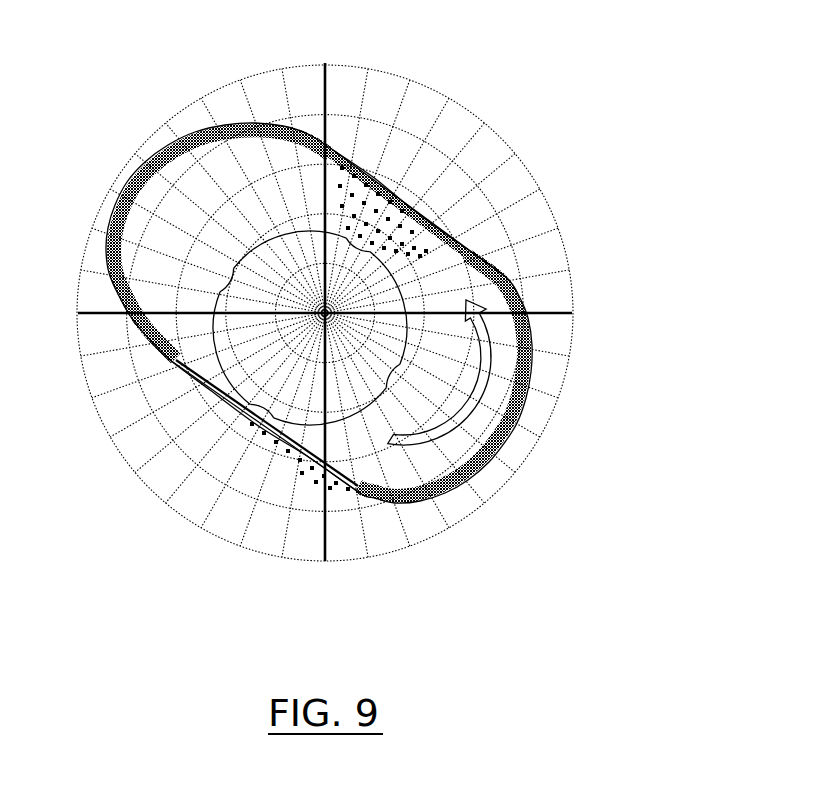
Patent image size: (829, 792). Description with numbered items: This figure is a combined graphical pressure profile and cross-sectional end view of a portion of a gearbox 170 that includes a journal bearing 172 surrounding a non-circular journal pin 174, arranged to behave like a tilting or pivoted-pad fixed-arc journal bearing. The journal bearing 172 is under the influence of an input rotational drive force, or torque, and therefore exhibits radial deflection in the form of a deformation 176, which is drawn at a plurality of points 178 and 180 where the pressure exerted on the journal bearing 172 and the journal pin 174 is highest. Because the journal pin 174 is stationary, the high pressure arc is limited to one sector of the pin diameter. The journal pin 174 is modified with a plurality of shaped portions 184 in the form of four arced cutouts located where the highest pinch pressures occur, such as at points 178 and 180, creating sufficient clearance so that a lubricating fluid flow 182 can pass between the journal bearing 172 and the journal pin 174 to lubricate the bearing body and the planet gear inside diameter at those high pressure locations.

The gearbox 170 is at (534, 62).
The journal bearing 172 is at (527, 306).
The journal pin 174 is at (326, 343).
The deformation 176 is at (388, 178).
The point 178 is at (398, 207).
The point 180 is at (290, 452).
The lubricating fluid flow 182 is at (423, 447).
The shaped portions 184 is at (243, 280).